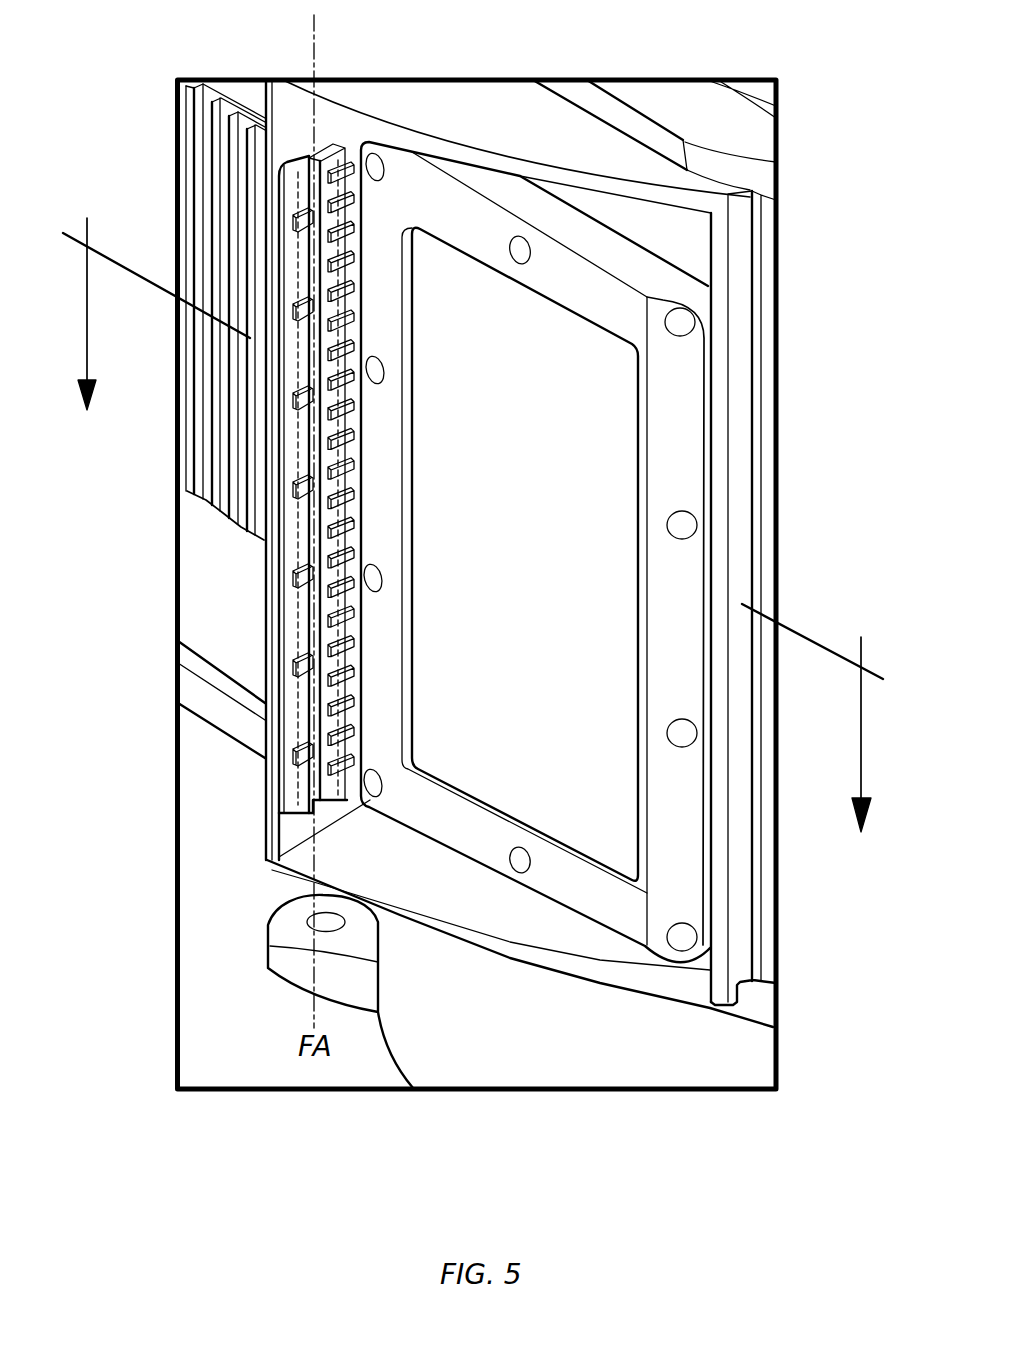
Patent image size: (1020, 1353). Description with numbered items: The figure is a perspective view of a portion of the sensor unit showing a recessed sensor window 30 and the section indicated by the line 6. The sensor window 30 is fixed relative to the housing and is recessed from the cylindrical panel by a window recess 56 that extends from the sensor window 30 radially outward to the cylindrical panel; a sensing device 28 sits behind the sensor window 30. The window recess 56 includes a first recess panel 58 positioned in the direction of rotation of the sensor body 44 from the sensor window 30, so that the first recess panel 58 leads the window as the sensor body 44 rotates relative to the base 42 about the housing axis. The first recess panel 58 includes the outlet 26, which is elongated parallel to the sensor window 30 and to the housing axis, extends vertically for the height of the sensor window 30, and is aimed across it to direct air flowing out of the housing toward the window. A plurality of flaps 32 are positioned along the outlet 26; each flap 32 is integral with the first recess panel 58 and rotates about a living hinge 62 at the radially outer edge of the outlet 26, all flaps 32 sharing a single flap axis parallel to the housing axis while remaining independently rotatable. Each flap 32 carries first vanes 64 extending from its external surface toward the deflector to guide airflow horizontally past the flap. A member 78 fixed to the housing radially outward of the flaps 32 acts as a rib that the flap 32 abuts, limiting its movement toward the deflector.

The section line 6- 6 is at (471, 524).
The outlet 26 is at (290, 787).
The sensing device 28 is at (603, 415).
The sensor window 30 is at (687, 478).
The flap 32 is at (326, 784).
The base 42 is at (437, 1043).
The sensor body 44 is at (673, 107).
The window recess 56 is at (517, 925).
The first recess panel 58 is at (291, 830).
The living hinge 62 is at (308, 188).
The first vane 64 is at (356, 378).
The member 78 is at (293, 224).